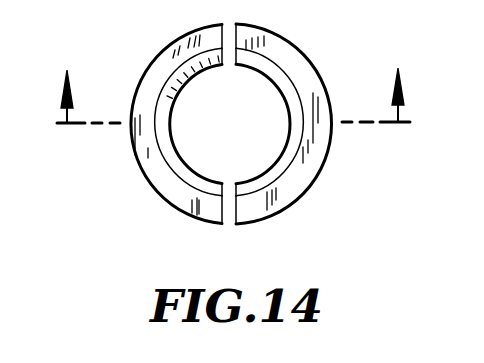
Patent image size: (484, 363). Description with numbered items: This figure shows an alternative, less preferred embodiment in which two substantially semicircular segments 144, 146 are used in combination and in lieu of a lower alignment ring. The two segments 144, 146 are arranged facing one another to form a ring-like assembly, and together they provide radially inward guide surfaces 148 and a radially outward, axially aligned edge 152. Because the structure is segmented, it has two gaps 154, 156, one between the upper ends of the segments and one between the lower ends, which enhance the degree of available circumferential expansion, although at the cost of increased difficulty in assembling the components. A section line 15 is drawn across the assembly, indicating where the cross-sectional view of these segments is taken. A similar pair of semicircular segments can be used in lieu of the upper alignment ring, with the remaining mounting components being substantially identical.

The section line 15- 15 is at (229, 121).
The semicircular segment 144 is at (168, 189).
The semicircular segment 146 is at (296, 140).
The radially inward guide surface 148 is at (172, 74).
The radially outward axially aligned edge 152 is at (275, 212).
The gap 154 is at (229, 55).
The gap 156 is at (229, 192).